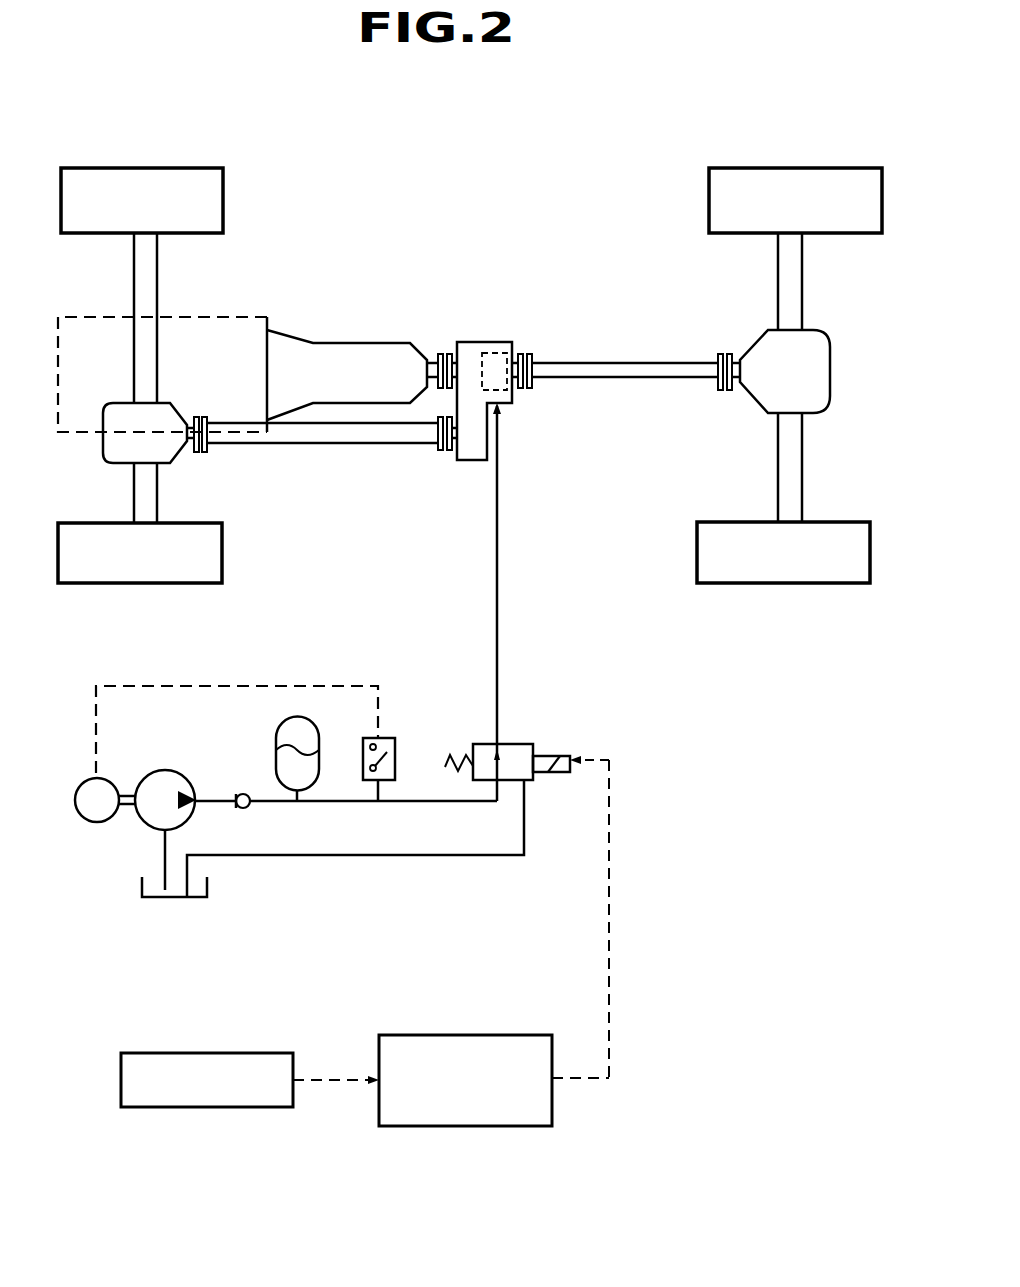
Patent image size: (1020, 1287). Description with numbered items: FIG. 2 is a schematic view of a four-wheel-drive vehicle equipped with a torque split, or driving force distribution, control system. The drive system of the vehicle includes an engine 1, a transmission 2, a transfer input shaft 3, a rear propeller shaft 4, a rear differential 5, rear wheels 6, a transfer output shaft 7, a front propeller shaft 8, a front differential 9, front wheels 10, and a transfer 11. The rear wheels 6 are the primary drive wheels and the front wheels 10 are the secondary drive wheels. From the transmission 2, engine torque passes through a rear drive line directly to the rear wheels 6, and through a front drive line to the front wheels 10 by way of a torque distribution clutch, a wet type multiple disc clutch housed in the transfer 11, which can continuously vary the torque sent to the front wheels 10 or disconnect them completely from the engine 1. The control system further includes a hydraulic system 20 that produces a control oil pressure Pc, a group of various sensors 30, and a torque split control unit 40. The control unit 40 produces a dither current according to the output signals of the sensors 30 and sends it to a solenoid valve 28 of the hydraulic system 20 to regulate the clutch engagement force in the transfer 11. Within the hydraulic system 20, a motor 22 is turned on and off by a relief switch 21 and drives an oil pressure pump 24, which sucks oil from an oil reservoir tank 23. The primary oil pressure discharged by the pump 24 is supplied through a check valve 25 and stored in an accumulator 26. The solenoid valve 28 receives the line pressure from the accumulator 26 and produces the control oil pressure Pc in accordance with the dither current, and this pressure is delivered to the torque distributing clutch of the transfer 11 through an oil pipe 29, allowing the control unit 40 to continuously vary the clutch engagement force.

The engine 1 is at (232, 315).
The transmission 2 is at (329, 345).
The transfer input shaft 3 is at (452, 356).
The rear propeller shaft 4 is at (610, 362).
The rear differential 5 is at (813, 333).
The rear wheels 6 is at (748, 175).
The transfer output shaft 7 is at (452, 450).
The front propeller shaft 8 is at (362, 444).
The front differential 9 is at (103, 450).
The front wheels 10 is at (108, 168).
The transfer 11 is at (484, 342).
The hydraulic system 20 is at (599, 740).
The relief switch 21 is at (398, 745).
The motor 22 is at (112, 775).
The oil reservoir tank 23 is at (207, 878).
The oil pressure pump 24 is at (172, 771).
The check valve 25 is at (243, 792).
The accumulator 26 is at (318, 752).
The solenoid valve 28 is at (484, 750).
The oil pipe 29 is at (497, 510).
The sensors 30 is at (240, 1052).
The torque split control unit 40 is at (455, 1034).